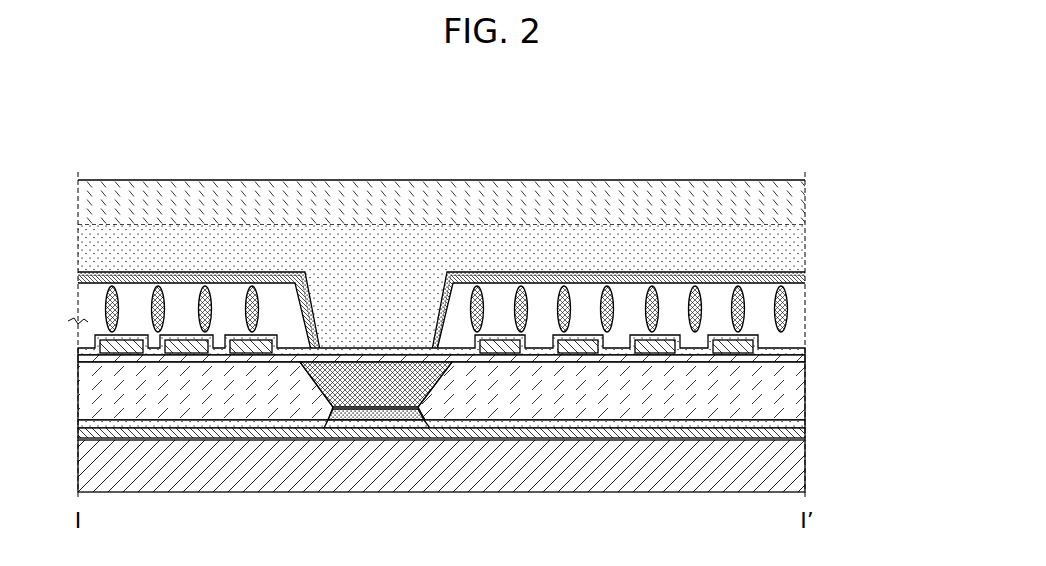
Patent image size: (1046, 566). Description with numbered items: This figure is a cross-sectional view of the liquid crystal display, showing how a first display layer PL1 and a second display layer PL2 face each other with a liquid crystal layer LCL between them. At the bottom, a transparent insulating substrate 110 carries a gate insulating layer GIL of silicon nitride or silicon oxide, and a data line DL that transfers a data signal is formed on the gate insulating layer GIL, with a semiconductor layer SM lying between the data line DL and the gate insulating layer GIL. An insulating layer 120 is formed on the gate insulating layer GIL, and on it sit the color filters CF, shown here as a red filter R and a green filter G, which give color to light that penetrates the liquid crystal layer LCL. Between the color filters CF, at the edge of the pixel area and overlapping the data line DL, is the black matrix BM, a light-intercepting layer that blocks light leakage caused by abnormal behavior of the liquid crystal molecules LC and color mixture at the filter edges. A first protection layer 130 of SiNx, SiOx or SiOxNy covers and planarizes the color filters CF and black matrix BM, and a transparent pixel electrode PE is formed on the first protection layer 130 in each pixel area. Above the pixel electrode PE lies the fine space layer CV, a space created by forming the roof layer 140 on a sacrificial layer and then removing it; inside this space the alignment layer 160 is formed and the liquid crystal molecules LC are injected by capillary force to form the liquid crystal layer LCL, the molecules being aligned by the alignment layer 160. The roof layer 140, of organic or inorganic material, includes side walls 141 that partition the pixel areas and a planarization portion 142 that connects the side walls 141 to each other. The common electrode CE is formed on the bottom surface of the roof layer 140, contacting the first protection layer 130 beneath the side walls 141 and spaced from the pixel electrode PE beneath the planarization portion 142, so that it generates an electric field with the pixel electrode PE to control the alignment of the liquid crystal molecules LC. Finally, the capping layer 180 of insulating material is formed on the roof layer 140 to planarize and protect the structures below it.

The substrate 110 is at (469, 466).
The gate insulating layer GIL is at (797, 434).
The insulating layer 120 is at (797, 424).
The data line DL is at (407, 429).
The semiconductor layer SM is at (366, 421).
The color filter CF is at (469, 387).
The red filter R is at (205, 391).
The green filter G is at (611, 391).
The black matrix BM is at (376, 384).
The first protection layer 130 is at (797, 353).
The pixel electrode PE is at (578, 352).
The liquid crystal molecules LC is at (789, 327).
The liquid crystal layer LCL is at (484, 317).
The fine space layer CV is at (484, 317).
The alignment layer 160 is at (797, 281).
The common electrode CE is at (800, 272).
The roof layer 140 is at (441, 221).
The side walls 141 is at (397, 312).
The planarization portion 142 is at (497, 253).
The capping layer 180 is at (797, 199).
The first display layer PL1 is at (498, 436).
The second display layer PL2 is at (498, 221).